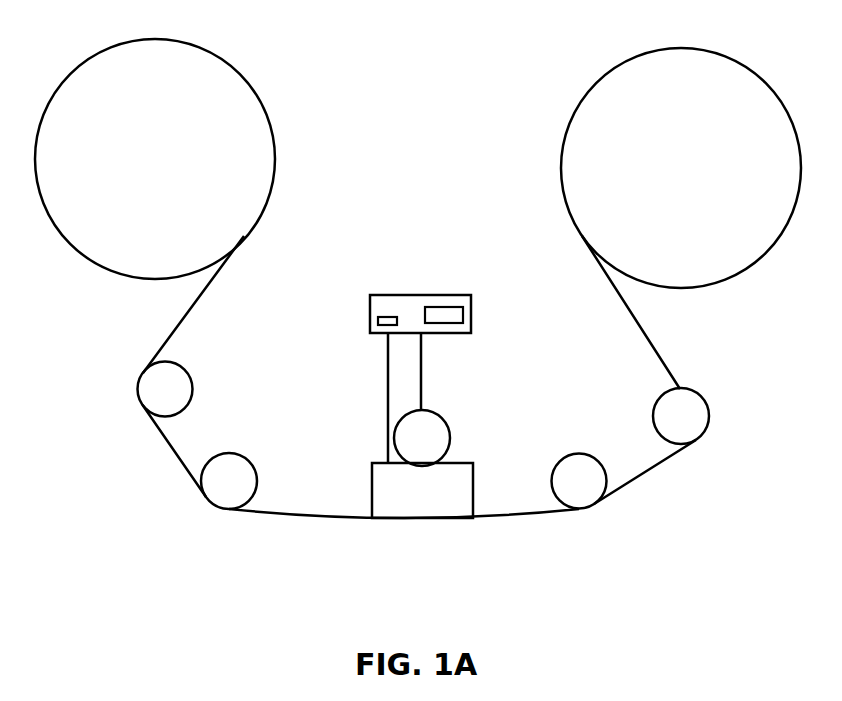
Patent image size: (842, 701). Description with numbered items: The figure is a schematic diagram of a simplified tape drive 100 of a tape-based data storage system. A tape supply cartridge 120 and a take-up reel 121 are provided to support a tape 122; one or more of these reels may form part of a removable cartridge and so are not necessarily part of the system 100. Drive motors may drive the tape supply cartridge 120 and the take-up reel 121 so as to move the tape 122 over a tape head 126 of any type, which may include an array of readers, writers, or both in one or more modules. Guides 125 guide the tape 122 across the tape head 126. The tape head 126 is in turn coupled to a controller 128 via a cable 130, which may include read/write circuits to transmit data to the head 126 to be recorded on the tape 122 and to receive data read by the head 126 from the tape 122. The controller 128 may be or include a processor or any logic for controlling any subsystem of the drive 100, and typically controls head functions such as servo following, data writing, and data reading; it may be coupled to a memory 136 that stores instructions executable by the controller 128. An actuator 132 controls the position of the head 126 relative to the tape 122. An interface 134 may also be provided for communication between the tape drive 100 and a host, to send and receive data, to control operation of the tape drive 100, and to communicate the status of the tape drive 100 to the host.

The tape drive 100 is at (112, 320).
The tape supply cartridge 120 is at (273, 131).
The take-up reel 121 is at (753, 265).
The tape 122 is at (303, 515).
The guides 125 is at (228, 453).
The tape head 126 is at (474, 490).
The controller 128 is at (419, 295).
The cable 130 is at (388, 435).
The actuator 132 is at (441, 417).
The interface 134 is at (455, 307).
The memory 136 is at (388, 317).